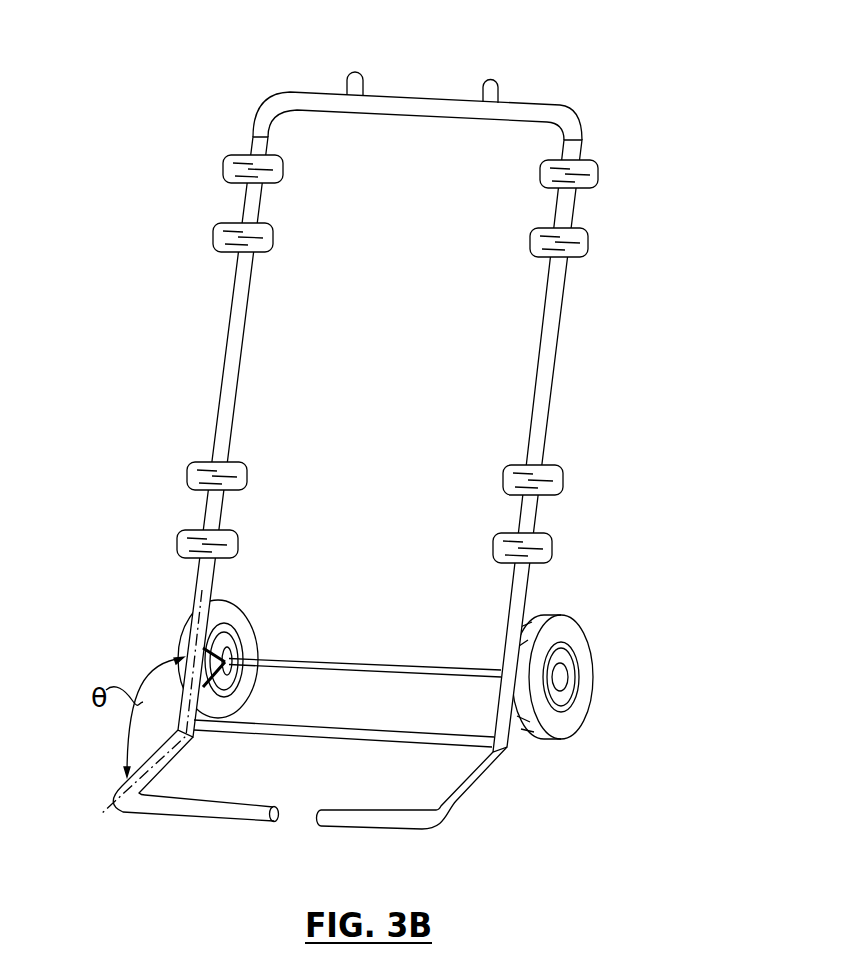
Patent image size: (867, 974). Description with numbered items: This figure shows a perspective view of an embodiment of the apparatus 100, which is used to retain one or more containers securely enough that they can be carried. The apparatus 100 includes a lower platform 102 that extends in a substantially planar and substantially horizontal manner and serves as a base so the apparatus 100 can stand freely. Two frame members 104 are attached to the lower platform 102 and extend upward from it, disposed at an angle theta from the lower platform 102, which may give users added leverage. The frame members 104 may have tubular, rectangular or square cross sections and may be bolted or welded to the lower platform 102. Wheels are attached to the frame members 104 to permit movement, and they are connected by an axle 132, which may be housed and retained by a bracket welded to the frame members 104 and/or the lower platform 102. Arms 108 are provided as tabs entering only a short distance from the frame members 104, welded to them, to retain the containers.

The apparatus 100 is at (388, 423).
The lower platform 102 is at (506, 797).
The frame members 104 is at (233, 361).
The arms 108 is at (223, 164).
The axle 132 is at (400, 670).